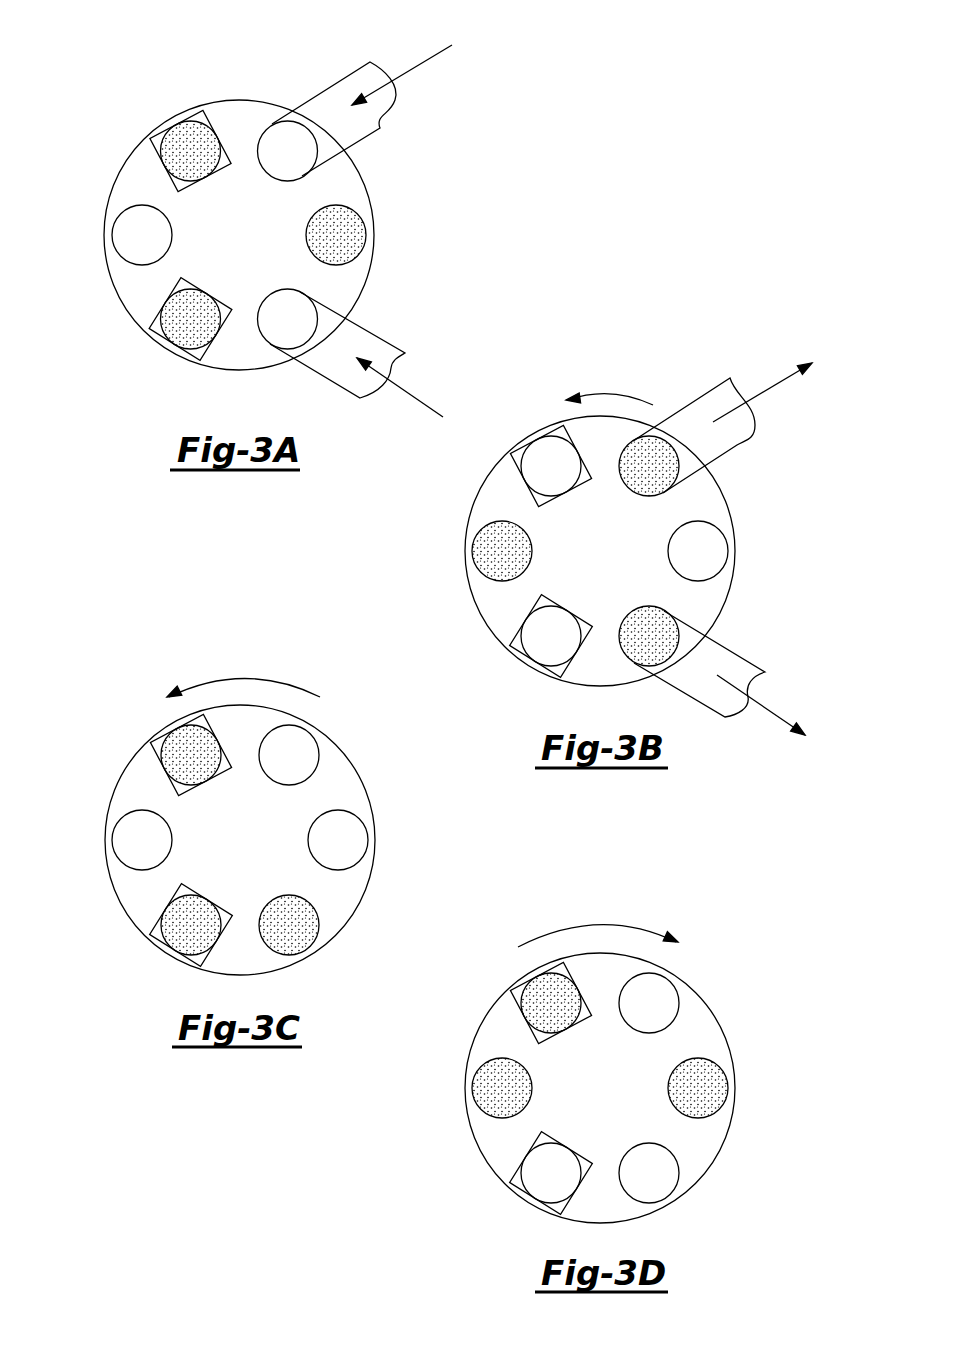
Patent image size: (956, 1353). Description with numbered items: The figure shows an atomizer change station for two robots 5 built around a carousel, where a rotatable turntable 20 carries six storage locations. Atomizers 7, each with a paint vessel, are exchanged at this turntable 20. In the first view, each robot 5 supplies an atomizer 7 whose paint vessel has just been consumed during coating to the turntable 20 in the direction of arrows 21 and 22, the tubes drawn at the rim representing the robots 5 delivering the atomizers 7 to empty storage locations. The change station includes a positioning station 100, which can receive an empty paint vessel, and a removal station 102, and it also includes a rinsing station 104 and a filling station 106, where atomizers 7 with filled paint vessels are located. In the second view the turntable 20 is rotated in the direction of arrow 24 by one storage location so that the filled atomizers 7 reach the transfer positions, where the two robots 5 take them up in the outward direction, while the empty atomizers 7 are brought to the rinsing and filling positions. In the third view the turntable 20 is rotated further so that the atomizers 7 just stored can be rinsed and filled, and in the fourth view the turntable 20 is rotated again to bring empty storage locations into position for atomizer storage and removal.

In FIG. 3A, the robot 5 is at (377, 132).
In FIG. 3B, the robot 5 is at (740, 447).
In FIG. 3A, the atomizer 7 is at (348, 237).
In FIG. 3B, the atomizer 7 is at (482, 554).
In FIG. 3C, the atomizer 7 is at (181, 748).
In FIG. 3D, the atomizer 7 is at (717, 1082).
In FIG. 3A, the turntable 20 is at (363, 183).
In FIG. 3B, the turntable 20 is at (730, 510).
In FIG. 3C, the turntable 20 is at (342, 750).
In FIG. 3D, the turntable 20 is at (712, 1165).
In FIG. 3A, the arrow 21 is at (410, 395).
In FIG. 3A, the arrow 22 is at (417, 68).
In FIG. 3B, the arrow 24 is at (622, 396).
In FIG. 3A, the positioning station 100 is at (283, 152).
In FIG. 3A, the removal station 102 is at (283, 318).
In FIG. 3A, the rinsing station 104 is at (187, 152).
In FIG. 3A, the filling station 106 is at (192, 320).